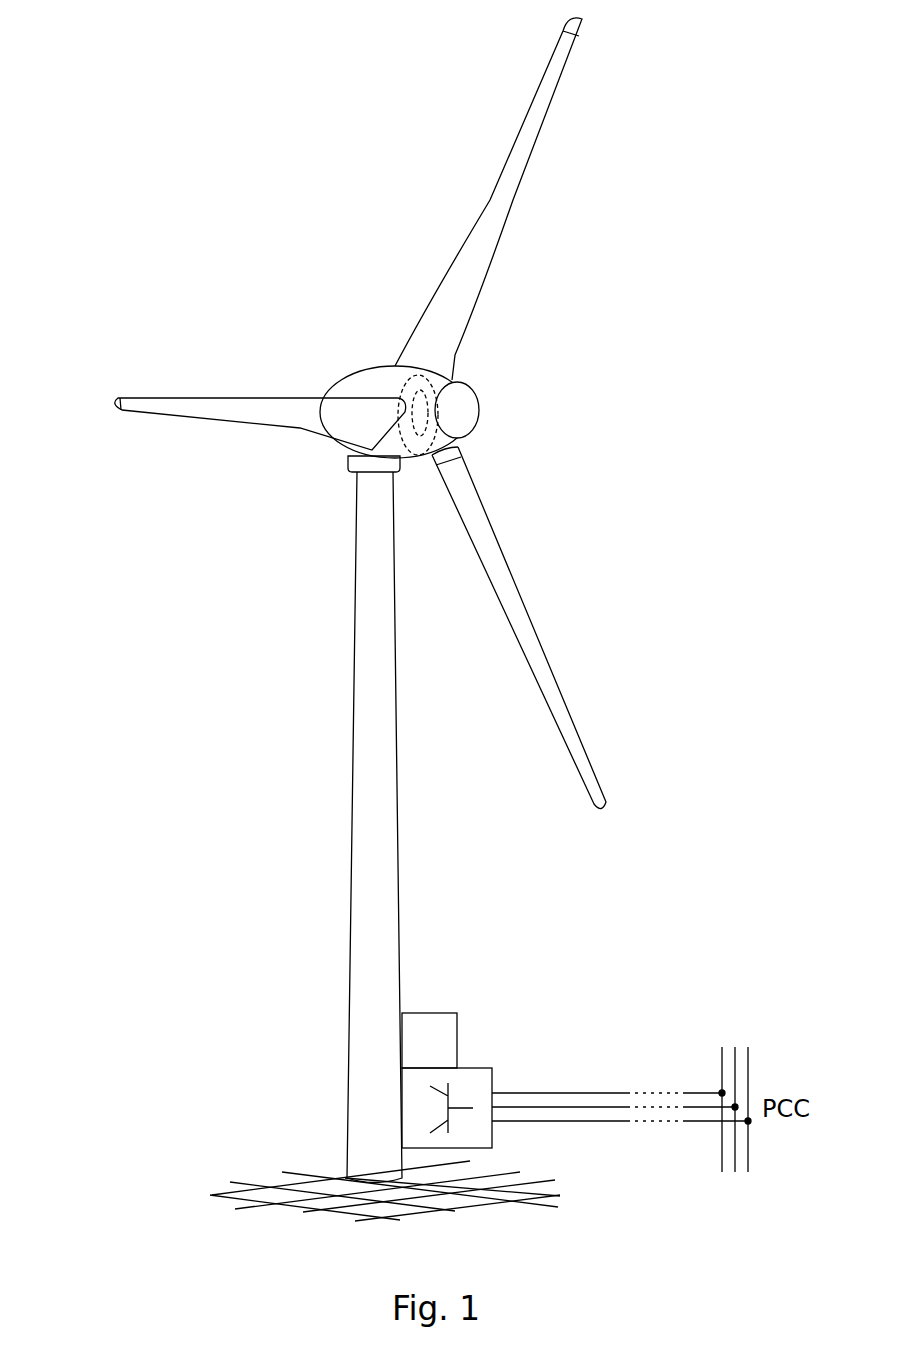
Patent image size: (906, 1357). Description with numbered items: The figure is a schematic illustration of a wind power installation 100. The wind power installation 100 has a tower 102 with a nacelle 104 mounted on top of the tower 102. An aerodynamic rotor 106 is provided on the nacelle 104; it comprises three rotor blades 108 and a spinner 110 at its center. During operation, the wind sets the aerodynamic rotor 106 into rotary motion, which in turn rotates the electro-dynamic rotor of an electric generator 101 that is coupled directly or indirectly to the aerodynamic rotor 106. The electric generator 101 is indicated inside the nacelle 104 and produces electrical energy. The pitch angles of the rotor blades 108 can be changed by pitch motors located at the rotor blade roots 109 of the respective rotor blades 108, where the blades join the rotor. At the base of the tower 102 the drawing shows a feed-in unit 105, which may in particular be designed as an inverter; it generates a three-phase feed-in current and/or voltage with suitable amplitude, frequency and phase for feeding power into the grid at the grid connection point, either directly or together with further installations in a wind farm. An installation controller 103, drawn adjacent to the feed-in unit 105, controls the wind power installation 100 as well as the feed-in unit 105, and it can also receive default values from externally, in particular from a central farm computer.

The wind power installation 100 is at (309, 545).
The electric generator 101 is at (425, 378).
The tower 102 is at (381, 823).
The installation controller 103 is at (457, 1040).
The nacelle 104 is at (370, 386).
The feed-in unit 105 is at (495, 1135).
The aerodynamic rotor 106 is at (548, 331).
The rotor blades 108 is at (518, 158).
The rotor blade roots 109 is at (462, 450).
The spinner 110 is at (462, 410).